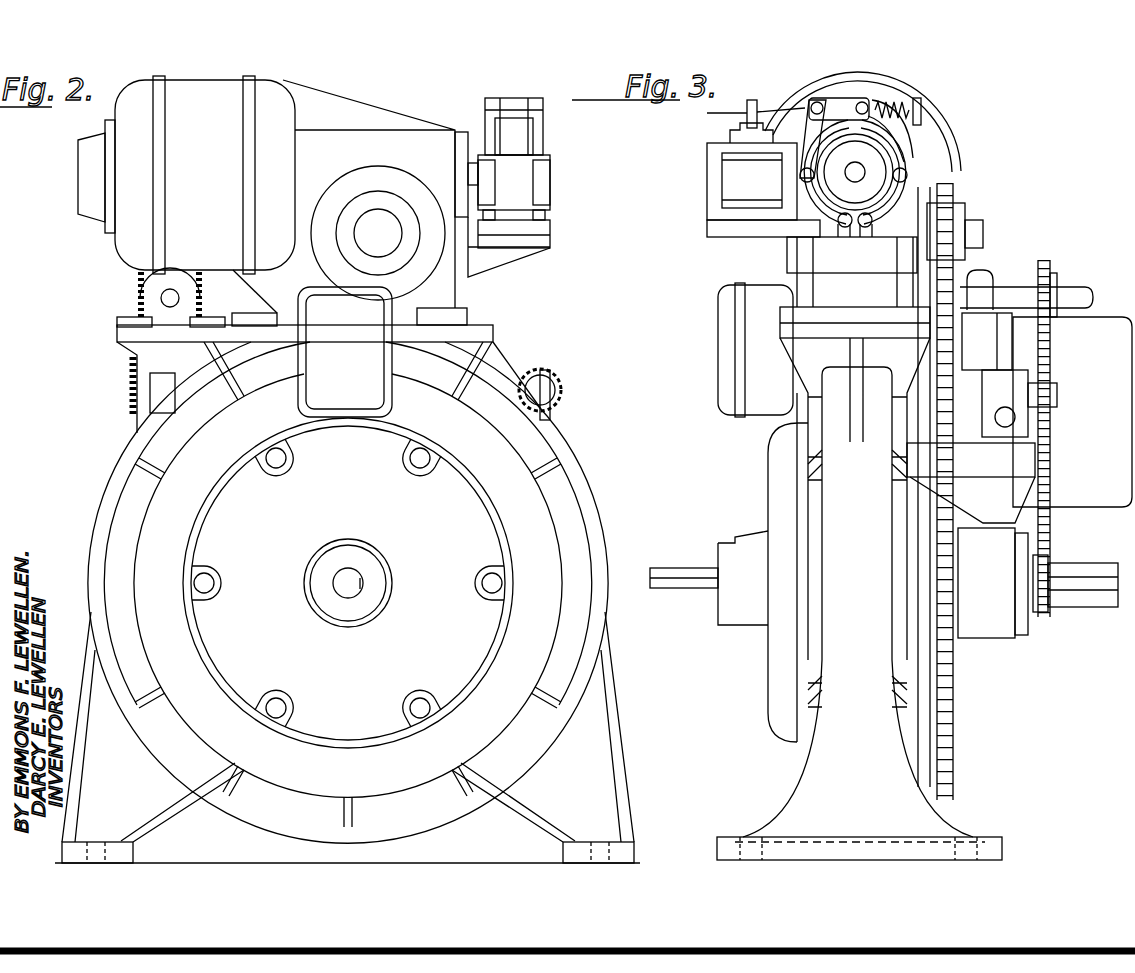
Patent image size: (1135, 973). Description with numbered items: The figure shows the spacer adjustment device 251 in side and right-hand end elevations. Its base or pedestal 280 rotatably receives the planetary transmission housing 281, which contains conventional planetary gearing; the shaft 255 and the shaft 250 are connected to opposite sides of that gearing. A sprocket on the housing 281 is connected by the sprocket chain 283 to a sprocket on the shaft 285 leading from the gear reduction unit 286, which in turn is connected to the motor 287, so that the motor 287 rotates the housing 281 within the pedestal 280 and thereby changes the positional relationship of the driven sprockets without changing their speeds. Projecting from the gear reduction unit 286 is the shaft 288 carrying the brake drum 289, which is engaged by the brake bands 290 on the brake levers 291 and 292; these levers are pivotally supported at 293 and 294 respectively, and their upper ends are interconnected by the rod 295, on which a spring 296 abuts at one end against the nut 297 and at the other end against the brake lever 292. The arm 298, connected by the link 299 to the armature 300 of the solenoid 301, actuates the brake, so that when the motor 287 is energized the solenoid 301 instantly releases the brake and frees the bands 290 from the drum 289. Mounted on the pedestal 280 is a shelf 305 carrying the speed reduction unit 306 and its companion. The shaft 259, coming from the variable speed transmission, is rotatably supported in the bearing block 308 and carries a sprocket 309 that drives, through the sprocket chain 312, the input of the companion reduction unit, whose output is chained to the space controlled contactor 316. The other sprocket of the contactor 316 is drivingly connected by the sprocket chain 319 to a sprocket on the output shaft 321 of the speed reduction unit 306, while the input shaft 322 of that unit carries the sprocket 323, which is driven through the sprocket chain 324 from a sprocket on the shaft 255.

In FIG. 2, the shaft 250 is at (350, 593).
In FIG. 3, the shaft 250 is at (689, 567).
In FIG. 2, the spacer adjustment device 251 is at (130, 434).
In FIG. 3, the shaft 255 is at (1090, 563).
In FIG. 2, the shaft 259 is at (167, 297).
In FIG. 3, the shaft 259 is at (1075, 288).
In FIG. 2, the base or pedestal 280 is at (618, 692).
In FIG. 3, the base or pedestal 280 is at (820, 760).
In FIG. 2, the planetary transmission housing 281 is at (547, 522).
In FIG. 3, the planetary transmission housing 281 is at (773, 480).
In FIG. 3, the sprocket chain 283 is at (950, 689).
In FIG. 3, the shaft 285 is at (977, 227).
In FIG. 2, the gear reduction unit 286 is at (378, 118).
In FIG. 2, the motor 287 is at (128, 247).
In FIG. 3, the motor 287 is at (943, 127).
In FIG. 2, the shaft 288 is at (470, 163).
In FIG. 3, the shaft 288 is at (870, 180).
In FIG. 3, the brake drum 289 is at (935, 170).
In FIG. 3, the brake bands 290 is at (833, 193).
In FIG. 3, the brake lever 291 is at (797, 164).
In FIG. 3, the brake lever 292 is at (930, 148).
In FIG. 3, the pivot 293 is at (843, 228).
In FIG. 3, the pivot 294 is at (868, 228).
In FIG. 3, the rod 295 is at (840, 108).
In FIG. 3, the spring 296 is at (903, 97).
In FIG. 3, the nut 297 is at (922, 108).
In FIG. 2, the arm 298 is at (516, 112).
In FIG. 3, the arm 298 is at (783, 92).
In FIG. 2, the link 299 is at (532, 111).
In FIG. 3, the link 299 is at (750, 118).
In FIG. 2, the armature 300 is at (523, 138).
In FIG. 3, the armature 300 is at (745, 137).
In FIG. 2, the solenoid 301 is at (545, 189).
In FIG. 3, the solenoid 301 is at (712, 203).
In FIG. 3, the shelf 305 is at (917, 453).
In FIG. 3, the speed reduction unit 306 is at (993, 430).
In FIG. 2, the bearing block 308 is at (143, 308).
In FIG. 3, the bearing block 308 is at (980, 275).
In FIG. 3, the sprocket 309 is at (1055, 275).
In FIG. 2, the sprocket chain 312 is at (129, 370).
In FIG. 3, the sprocket chain 312 is at (1050, 272).
In FIG. 3, the space controlled contactor 316 is at (1118, 496).
In FIG. 3, the sprocket chain 319 is at (972, 418).
In FIG. 3, the output shaft 321 is at (976, 390).
In FIG. 3, the input shaft 322 is at (1057, 393).
In FIG. 2, the sprocket 323 is at (550, 388).
In FIG. 2, the sprocket chain 324 is at (558, 400).
In FIG. 3, the sprocket chain 324 is at (1050, 457).